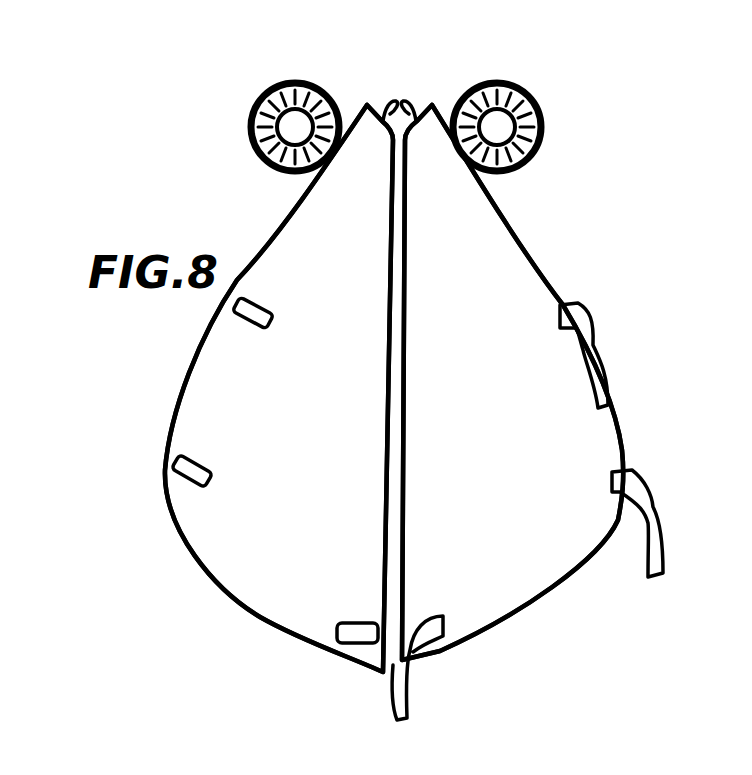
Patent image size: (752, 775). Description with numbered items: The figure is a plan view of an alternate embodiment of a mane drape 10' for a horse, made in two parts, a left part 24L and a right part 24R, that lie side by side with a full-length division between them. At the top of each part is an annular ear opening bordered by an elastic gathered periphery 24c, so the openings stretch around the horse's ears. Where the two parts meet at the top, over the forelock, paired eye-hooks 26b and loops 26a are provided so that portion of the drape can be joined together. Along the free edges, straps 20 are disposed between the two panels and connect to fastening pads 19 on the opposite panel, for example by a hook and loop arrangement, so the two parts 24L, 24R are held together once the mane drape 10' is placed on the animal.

The mane drape 10' is at (384, 388).
The fastening pads 19 is at (170, 473).
The straps 20 is at (578, 303).
The left part of mane drape 24L is at (338, 416).
The right part of mane drape 24R is at (510, 416).
The elastic gathered periphery 24c is at (537, 97).
The loops 26a is at (390, 102).
The eye-hooks 26b is at (408, 106).